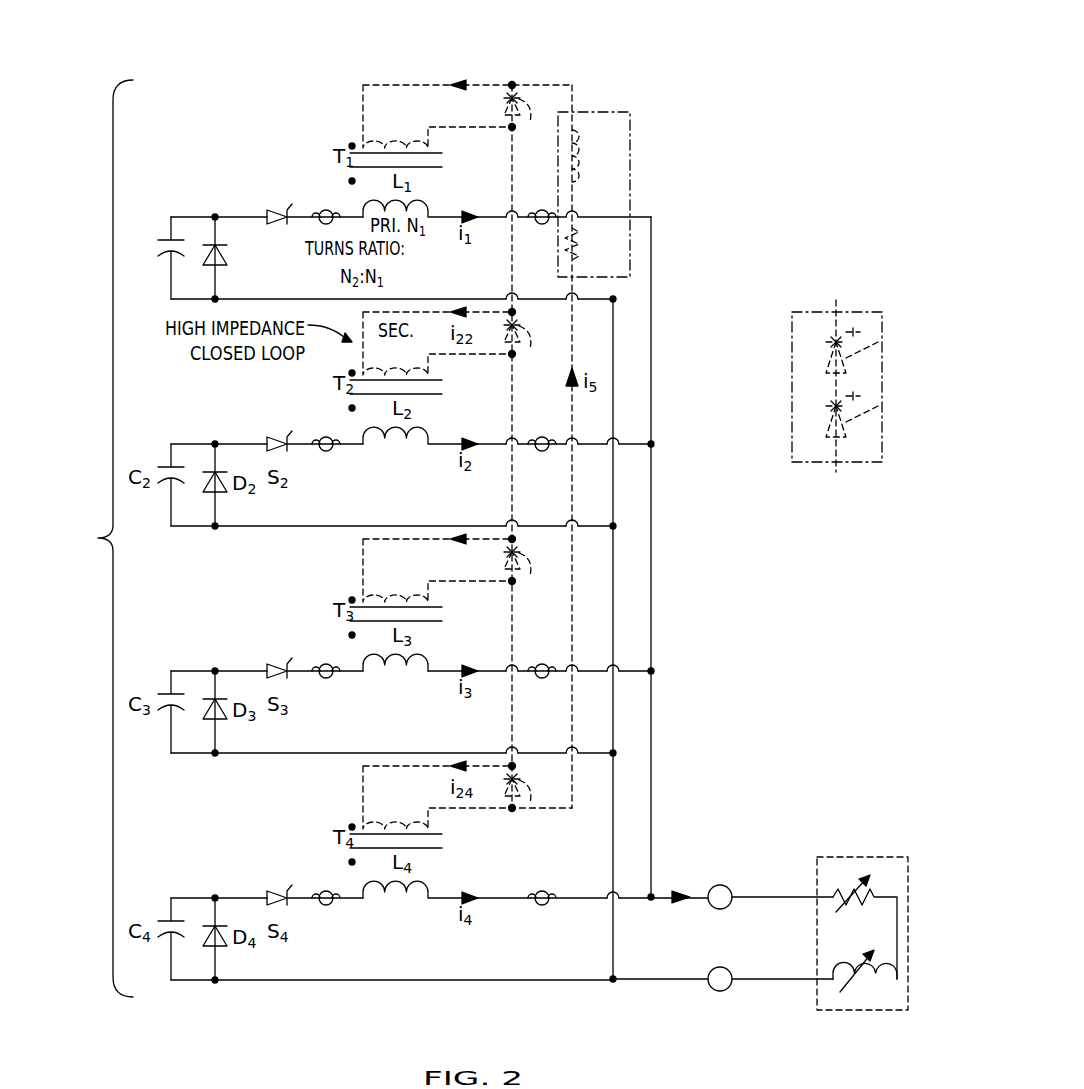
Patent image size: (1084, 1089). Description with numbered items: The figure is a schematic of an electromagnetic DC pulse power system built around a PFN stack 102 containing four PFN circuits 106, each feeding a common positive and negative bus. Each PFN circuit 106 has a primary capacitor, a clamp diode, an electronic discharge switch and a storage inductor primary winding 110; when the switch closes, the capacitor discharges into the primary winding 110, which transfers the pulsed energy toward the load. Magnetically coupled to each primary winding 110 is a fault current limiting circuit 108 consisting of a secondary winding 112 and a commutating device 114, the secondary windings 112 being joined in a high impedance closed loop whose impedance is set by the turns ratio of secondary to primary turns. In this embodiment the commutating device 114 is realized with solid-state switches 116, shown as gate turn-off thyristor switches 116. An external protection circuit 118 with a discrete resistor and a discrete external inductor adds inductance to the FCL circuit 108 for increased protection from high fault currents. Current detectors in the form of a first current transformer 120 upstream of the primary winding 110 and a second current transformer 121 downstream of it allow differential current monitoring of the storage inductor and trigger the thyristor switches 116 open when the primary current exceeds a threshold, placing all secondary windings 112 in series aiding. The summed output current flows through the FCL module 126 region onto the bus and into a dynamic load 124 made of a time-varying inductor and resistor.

The PFN stack 102 is at (97, 538).
The PFN circuit 106 is at (243, 217).
The fault current limiting (FCL) circuit 108 is at (396, 78).
The storage inductor primary winding 110 is at (394, 666).
The secondary winding 112 is at (396, 598).
The commutating device 114 is at (710, 469).
The solid-state switch (GTO thyristor switch) 116 is at (878, 342).
The external protection circuit 118 is at (604, 108).
The current transformer (first CT) 120 is at (318, 210).
The current transformer (second CT) 121 is at (533, 210).
The dynamic load 124 is at (854, 856).
The FCL module 126 is at (697, 842).